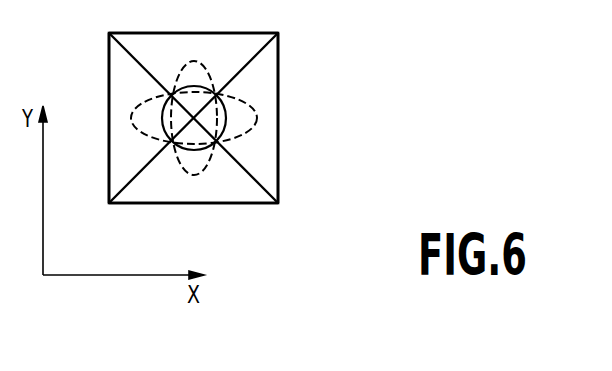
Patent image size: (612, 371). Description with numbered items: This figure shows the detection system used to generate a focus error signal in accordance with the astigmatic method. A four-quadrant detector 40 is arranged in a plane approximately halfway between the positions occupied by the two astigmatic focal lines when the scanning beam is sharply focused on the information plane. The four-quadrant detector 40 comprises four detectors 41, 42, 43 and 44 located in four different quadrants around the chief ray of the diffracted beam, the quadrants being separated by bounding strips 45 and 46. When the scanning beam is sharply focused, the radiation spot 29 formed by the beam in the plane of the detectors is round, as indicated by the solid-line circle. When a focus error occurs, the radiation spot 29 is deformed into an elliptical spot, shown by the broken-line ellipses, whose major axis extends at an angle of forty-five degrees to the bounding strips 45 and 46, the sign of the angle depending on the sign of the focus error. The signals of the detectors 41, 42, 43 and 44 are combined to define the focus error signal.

The radiation spot 29 is at (226, 118).
The four-quadrant detector 40 is at (325, 76).
The detector 41 is at (201, 47).
The detector 42 is at (124, 76).
The detector 43 is at (144, 190).
The detector 44 is at (268, 165).
The bounding strip 45 is at (272, 39).
The bounding strip 46 is at (263, 190).